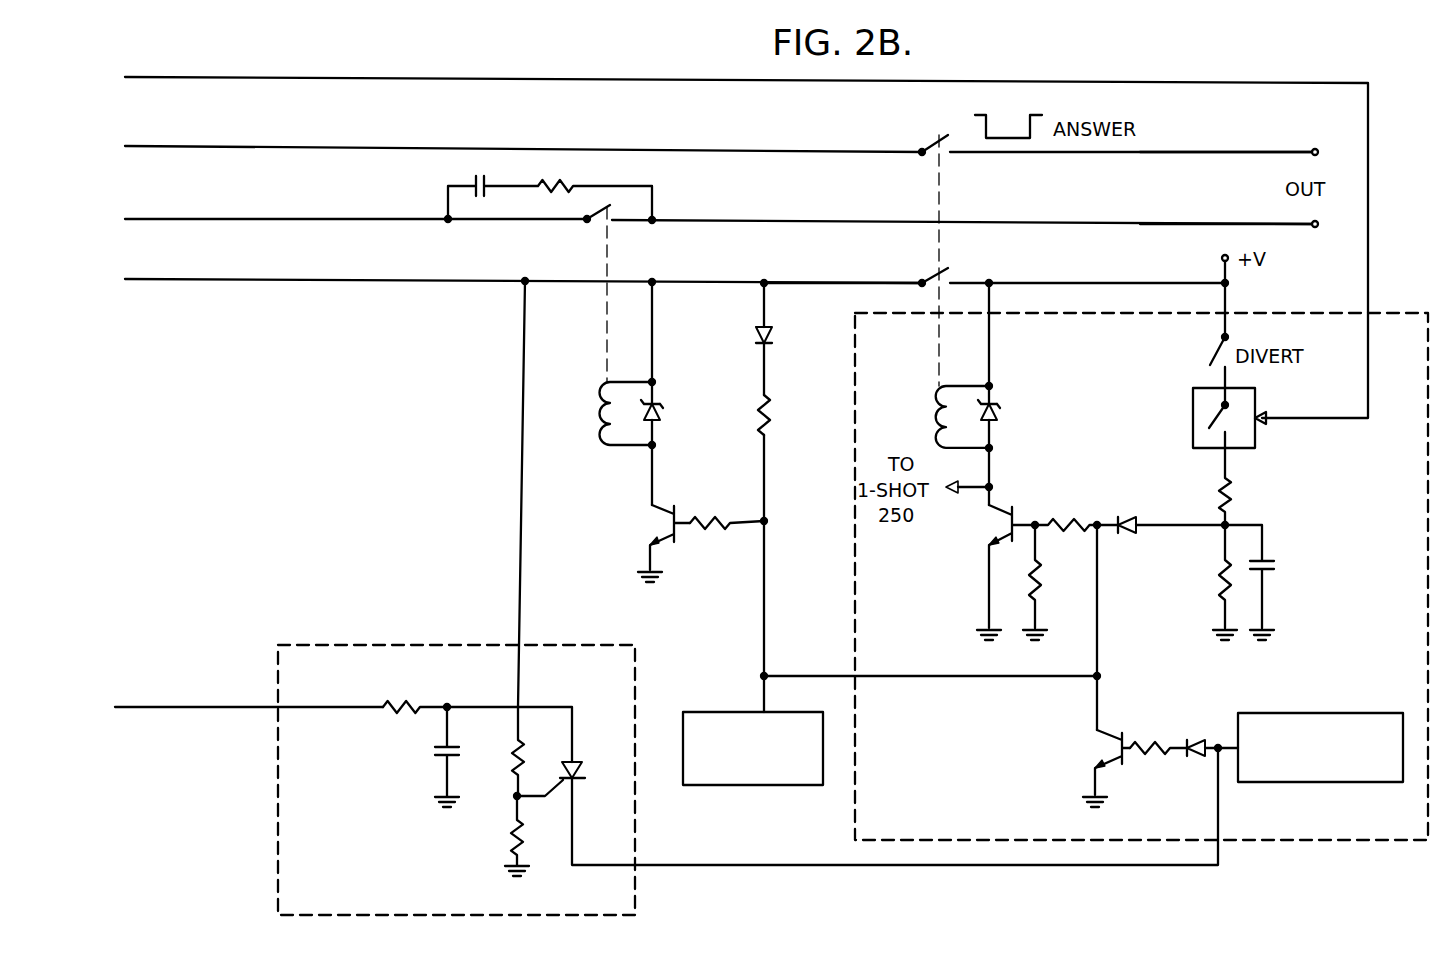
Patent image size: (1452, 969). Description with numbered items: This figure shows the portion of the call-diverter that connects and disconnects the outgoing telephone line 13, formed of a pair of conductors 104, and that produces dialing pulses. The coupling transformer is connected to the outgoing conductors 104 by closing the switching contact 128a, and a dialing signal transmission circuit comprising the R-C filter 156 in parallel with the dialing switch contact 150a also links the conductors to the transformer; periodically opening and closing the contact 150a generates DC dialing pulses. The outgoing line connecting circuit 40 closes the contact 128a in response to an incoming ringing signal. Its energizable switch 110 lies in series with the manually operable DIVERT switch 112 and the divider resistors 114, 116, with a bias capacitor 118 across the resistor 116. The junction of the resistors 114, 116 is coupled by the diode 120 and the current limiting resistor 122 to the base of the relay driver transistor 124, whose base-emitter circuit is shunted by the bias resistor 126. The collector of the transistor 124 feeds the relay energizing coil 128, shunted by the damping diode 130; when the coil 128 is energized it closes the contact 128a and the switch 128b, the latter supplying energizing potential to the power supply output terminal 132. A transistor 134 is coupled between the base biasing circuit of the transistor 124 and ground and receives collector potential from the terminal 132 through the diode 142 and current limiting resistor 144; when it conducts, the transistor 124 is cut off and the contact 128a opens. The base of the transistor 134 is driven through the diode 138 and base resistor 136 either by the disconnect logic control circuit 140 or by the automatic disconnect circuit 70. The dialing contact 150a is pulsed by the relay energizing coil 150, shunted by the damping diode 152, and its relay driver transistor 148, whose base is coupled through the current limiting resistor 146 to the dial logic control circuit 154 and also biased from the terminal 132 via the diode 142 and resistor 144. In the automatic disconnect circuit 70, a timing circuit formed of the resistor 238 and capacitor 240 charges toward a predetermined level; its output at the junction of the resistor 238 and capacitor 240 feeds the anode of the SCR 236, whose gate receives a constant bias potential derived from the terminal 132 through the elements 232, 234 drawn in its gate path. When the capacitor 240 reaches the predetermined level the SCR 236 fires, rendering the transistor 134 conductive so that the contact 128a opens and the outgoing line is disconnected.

The outgoing telephone line 13 is at (1346, 147).
The outgoing line conductors 104 is at (1160, 153).
The power supply output terminal 132 is at (811, 283).
The switching contact 128a is at (933, 143).
The switch 128b is at (935, 273).
The R-C filter 156 is at (516, 176).
The dialing switch contact 150a is at (602, 226).
The relay energizing coil 150 is at (600, 411).
The damping diode 152 is at (661, 418).
The relay driver transistor 148 is at (663, 527).
The current limiting resistor 146 is at (711, 519).
The diode 142 is at (752, 345).
The current limiting resistor 144 is at (757, 420).
The dial logic control circuit 154 is at (735, 712).
The outgoing line connecting circuit 40 is at (1062, 832).
The relay energizing coil 128 is at (932, 412).
The damping diode 130 is at (1001, 412).
The relay driver transistor 124 is at (1009, 526).
The bias resistor 126 is at (1041, 578).
The current limiting resistor 122 is at (1055, 522).
The diode 120 is at (1127, 518).
The DIVERT switch 112 is at (1210, 350).
The energizable switch 110 is at (1257, 440).
The divider resistor 114 is at (1233, 496).
The divider resistor 116 is at (1218, 582).
The bias capacitor 118 is at (1281, 566).
The transistor 134 is at (1116, 750).
The base resistor 136 is at (1155, 745).
The diode 138 is at (1208, 729).
The disconnect logic control circuit 140 is at (1305, 713).
The automatic disconnecting circuit 70 is at (506, 909).
The resistor 238 is at (398, 705).
The capacitor 240 is at (428, 758).
The resistor 232 is at (510, 757).
The resistor 234 is at (511, 834).
The solid-state actuable switch 236 is at (578, 762).